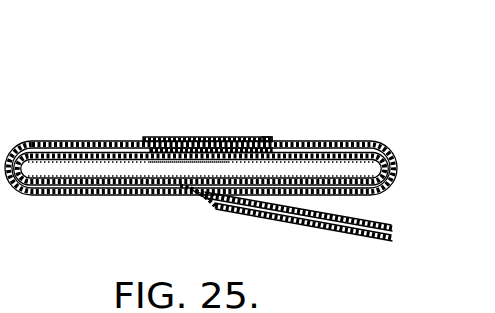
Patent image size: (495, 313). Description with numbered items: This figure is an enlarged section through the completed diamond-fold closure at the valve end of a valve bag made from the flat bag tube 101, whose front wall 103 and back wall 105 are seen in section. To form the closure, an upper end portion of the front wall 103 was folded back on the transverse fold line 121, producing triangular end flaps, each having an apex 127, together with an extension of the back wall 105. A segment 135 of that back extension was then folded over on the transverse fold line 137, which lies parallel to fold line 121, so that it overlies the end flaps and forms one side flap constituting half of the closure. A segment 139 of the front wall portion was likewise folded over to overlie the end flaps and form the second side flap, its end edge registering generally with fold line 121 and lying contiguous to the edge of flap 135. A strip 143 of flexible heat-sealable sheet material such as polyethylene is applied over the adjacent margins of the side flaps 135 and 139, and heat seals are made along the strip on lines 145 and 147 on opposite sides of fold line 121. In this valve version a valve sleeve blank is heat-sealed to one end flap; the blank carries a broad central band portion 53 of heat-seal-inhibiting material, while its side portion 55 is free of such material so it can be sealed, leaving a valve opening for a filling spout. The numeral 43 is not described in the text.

The segment 139 is at (325, 144).
The segment 135 is at (97, 140).
The central band portion 53 is at (120, 175).
The side portion 55 is at (190, 173).
The heat seal line 145 is at (150, 139).
The strip 143 is at (215, 138).
The heat seal line 147 is at (266, 138).
The front wall 103 is at (343, 222).
The back wall 105 is at (292, 224).
The bag tube 101 is at (357, 244).
The fold line 121 is at (195, 193).
The fold line 137 is at (12, 176).
The apex 127 is at (21, 110).
The component 43 is at (8, 89).